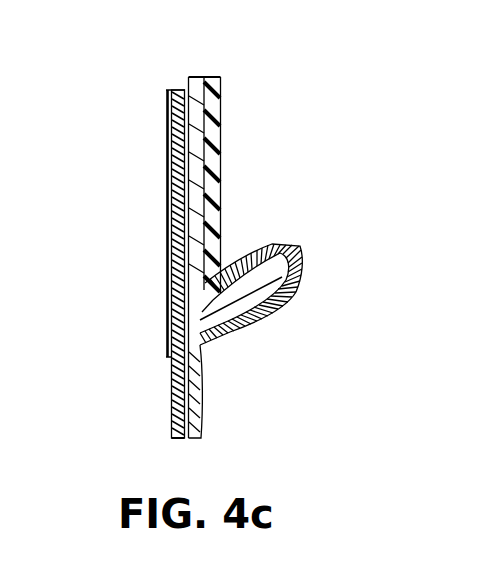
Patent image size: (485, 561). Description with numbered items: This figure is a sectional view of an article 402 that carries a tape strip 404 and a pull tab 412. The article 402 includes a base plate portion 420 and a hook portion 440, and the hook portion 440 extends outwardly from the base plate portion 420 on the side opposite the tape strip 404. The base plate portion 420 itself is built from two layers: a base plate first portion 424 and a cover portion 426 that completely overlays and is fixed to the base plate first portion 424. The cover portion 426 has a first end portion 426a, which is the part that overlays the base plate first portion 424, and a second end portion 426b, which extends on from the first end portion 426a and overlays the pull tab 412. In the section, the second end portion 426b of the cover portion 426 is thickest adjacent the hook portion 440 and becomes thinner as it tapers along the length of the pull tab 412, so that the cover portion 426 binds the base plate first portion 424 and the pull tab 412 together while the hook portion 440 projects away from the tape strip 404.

The article 402 is at (125, 174).
The tape strip 404 is at (160, 296).
The pull tab 412 is at (172, 393).
The base plate portion 420 is at (203, 62).
The base plate first portion 424 is at (200, 183).
The cover portion 426 is at (233, 238).
The cover portion first end portion 426a is at (220, 113).
The cover portion second end portion 426b is at (188, 405).
The hook portion 440 is at (298, 310).